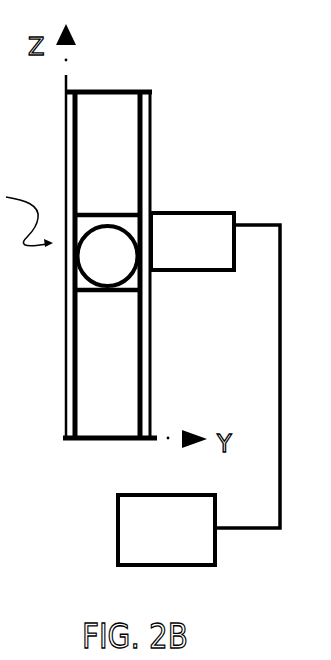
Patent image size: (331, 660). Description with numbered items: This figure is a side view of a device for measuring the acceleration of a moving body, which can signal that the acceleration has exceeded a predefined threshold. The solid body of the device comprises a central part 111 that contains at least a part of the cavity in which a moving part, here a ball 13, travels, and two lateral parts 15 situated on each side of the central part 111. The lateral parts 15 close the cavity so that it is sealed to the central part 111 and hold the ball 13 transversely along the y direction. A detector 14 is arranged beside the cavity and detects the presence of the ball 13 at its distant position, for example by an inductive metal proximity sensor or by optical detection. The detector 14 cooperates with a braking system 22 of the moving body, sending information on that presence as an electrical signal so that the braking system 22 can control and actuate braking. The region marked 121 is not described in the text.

The ball 13 is at (113, 244).
The detector 14 is at (192, 241).
The lateral parts 15 is at (143, 80).
The braking system 22 is at (166, 530).
The central part 111 is at (108, 153).
The lower passage section 121 is at (121, 300).